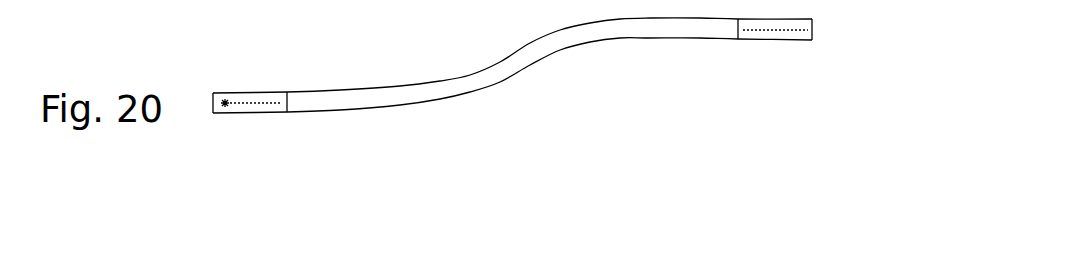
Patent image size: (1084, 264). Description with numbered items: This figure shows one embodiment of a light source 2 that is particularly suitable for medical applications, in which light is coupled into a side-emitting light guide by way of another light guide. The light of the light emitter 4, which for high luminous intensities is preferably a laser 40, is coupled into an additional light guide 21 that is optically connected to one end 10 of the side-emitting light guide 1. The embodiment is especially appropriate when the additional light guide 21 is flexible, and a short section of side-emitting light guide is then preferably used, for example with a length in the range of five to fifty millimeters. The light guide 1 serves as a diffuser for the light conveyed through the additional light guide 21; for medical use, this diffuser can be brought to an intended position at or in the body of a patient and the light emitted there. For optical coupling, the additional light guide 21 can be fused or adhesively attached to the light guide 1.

The side-emitting light guide 1 is at (524, 122).
The light source 2 is at (512, 122).
The light emitter 4 is at (282, 139).
The laser 40 is at (247, 113).
The end of the side-emitting light guide 10 is at (745, 43).
The additional light guide 21 is at (480, 90).